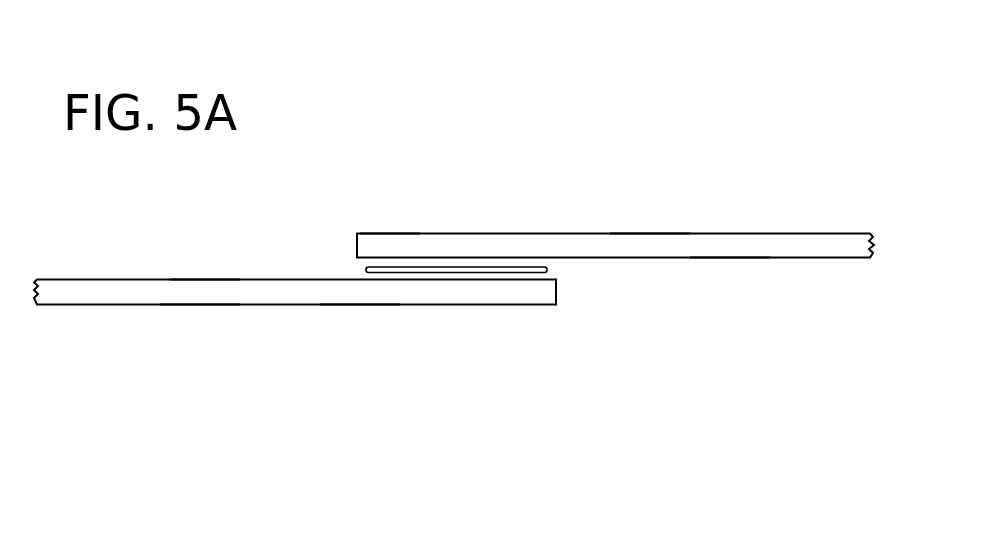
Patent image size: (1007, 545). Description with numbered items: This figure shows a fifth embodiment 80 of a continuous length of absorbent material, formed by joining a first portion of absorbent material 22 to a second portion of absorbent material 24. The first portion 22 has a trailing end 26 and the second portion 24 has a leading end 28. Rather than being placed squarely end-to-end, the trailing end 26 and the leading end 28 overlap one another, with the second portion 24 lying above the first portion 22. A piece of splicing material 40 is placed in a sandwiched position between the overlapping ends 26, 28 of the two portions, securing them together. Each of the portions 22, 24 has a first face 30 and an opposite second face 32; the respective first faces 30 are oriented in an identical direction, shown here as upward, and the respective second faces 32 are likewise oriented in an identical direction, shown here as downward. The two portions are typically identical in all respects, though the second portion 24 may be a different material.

The first portion of absorbent material 22 is at (116, 272).
The second portion of absorbent material 24 is at (815, 225).
The trailing end 26 is at (363, 305).
The leading end 28 is at (378, 233).
The first face 30 is at (202, 279).
The second face 32 is at (196, 305).
The piece of splicing material 40 is at (470, 267).
The fifth embodiment 80 is at (430, 186).